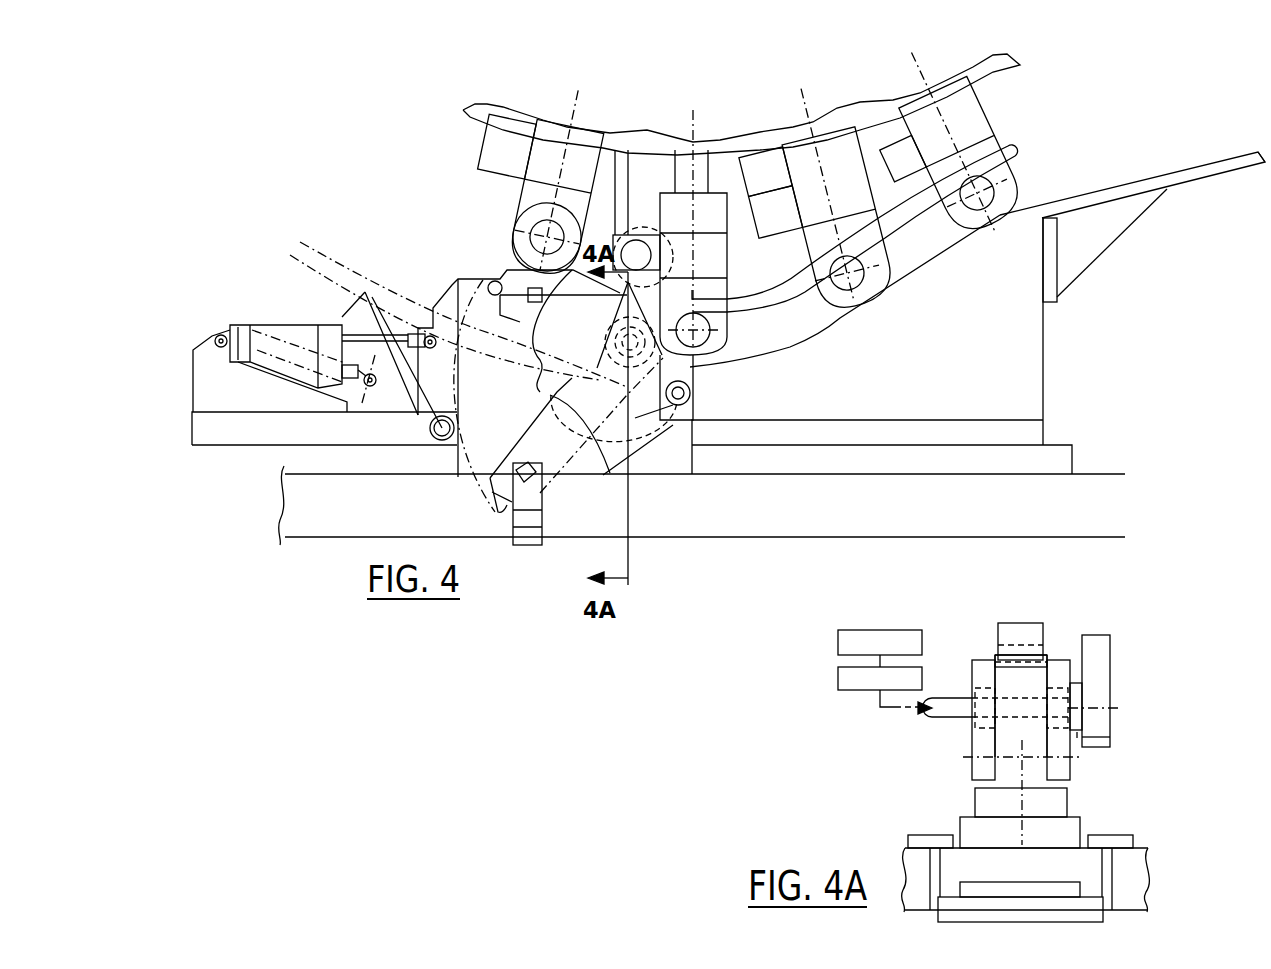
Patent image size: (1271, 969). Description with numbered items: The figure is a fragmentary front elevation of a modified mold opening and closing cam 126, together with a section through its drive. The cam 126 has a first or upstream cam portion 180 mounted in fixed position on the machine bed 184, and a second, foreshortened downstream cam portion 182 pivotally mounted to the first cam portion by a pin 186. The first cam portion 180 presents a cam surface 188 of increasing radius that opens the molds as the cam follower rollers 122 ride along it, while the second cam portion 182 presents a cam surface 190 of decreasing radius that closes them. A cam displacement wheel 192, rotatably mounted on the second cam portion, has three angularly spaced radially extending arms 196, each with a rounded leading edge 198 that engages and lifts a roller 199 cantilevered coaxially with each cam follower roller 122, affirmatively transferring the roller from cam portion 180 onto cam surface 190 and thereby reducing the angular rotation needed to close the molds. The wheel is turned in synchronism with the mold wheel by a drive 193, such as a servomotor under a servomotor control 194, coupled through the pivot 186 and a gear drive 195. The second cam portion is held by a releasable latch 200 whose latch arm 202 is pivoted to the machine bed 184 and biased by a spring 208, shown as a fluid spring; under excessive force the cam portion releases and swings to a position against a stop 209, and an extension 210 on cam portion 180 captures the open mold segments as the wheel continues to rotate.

In FIG. 4, the cam follower roller 122 is at (1020, 197).
In FIG. 4, the cam 126 is at (1030, 330).
In FIG. 4, the first cam portion 180 is at (1030, 387).
In FIG. 4, the second cam portion 182 is at (540, 378).
In FIG. 4A, the second cam portion 182 is at (1037, 640).
In FIG. 4, the machine bed 184 is at (827, 513).
In FIG. 4A, the machine bed 184 is at (1132, 870).
In FIG. 4A, the pin 186 is at (1013, 710).
In FIG. 4, the cam surface 188 is at (922, 245).
In FIG. 4, the cam surface 190 is at (537, 345).
In FIG. 4A, the cam surface 190 is at (1017, 623).
In FIG. 4, the cam displacement wheel 192 is at (698, 367).
In FIG. 4A, the cam displacement wheel 192 is at (1122, 687).
In FIG. 4A, the drive 193 is at (838, 683).
In FIG. 4A, the servomotor control 194 is at (838, 647).
In FIG. 4A, the gear drive 195 is at (1077, 732).
In FIG. 4, the arm 196 is at (694, 374).
In FIG. 4A, the arm 196 is at (1103, 645).
In FIG. 4, the leading edge 198 is at (612, 295).
In FIG. 4, the roller 199 is at (823, 305).
In FIG. 4, the releasable latch 200 is at (283, 268).
In FIG. 4, the latch arm 202 is at (457, 290).
In FIG. 4, the spring 208 is at (295, 300).
In FIG. 4, the stop 209 is at (535, 517).
In FIG. 4, the extension 210 is at (1228, 173).